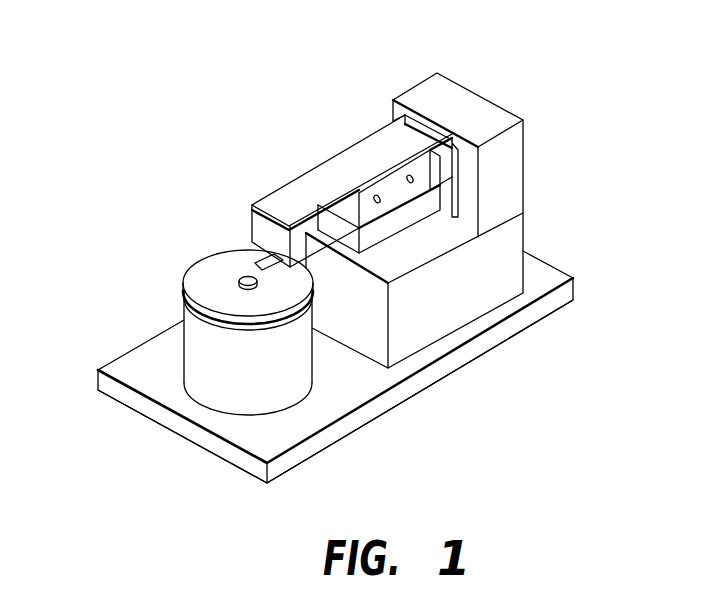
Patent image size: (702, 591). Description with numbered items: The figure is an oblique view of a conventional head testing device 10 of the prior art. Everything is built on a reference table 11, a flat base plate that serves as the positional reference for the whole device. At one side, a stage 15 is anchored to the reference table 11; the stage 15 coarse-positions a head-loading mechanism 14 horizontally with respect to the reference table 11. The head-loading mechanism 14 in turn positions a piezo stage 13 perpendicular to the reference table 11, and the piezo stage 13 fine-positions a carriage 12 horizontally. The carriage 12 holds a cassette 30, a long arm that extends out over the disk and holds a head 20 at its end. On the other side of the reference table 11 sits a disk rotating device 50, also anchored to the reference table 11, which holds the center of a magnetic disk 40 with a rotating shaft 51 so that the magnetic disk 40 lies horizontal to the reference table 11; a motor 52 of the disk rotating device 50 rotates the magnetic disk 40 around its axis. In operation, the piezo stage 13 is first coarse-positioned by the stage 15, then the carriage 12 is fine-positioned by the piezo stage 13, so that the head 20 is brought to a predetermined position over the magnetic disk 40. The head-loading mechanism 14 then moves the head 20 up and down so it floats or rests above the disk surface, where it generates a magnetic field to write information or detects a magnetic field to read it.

The head testing device 10 is at (536, 444).
The reference table 11 is at (545, 272).
The carriage 12 is at (370, 207).
The piezo stage 13 is at (420, 210).
The head-loading mechanism 14 is at (467, 110).
The stage 15 is at (411, 328).
The head 20 is at (318, 300).
The cassette 30 is at (234, 69).
The magnetic disk 40 is at (203, 270).
The disk rotating device 50 is at (115, 273).
The rotating shaft 51 is at (247, 277).
The motor 52 is at (208, 353).